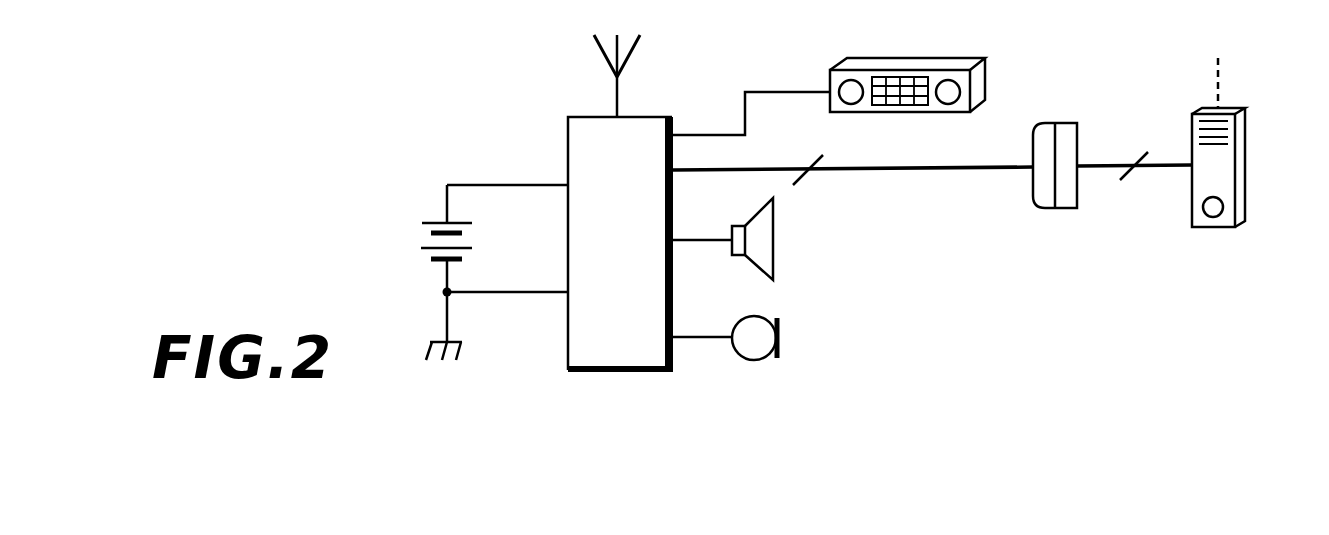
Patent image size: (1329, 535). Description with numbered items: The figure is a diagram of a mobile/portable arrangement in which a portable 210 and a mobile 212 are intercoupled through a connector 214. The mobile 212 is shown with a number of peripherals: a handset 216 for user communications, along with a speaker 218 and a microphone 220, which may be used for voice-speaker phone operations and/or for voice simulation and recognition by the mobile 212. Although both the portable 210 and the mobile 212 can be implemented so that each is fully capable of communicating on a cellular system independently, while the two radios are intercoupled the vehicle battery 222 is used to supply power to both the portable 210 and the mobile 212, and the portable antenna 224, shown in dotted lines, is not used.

The portable 210 is at (1245, 172).
The mobile 212 is at (568, 117).
The connector 214 is at (1055, 123).
The handset 216 is at (923, 58).
The speaker 218 is at (775, 233).
The microphone 220 is at (780, 338).
The vehicle battery 222 is at (472, 224).
The portable antenna 224 is at (1214, 80).